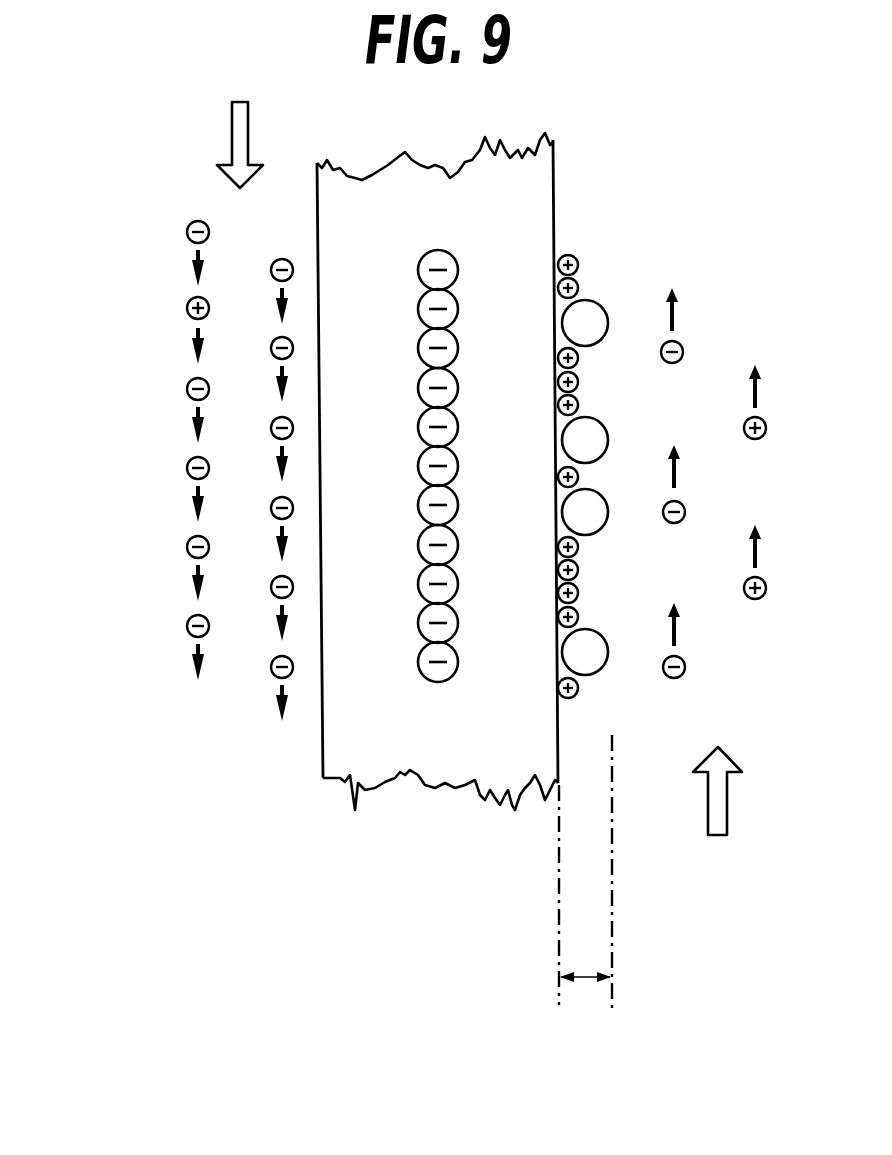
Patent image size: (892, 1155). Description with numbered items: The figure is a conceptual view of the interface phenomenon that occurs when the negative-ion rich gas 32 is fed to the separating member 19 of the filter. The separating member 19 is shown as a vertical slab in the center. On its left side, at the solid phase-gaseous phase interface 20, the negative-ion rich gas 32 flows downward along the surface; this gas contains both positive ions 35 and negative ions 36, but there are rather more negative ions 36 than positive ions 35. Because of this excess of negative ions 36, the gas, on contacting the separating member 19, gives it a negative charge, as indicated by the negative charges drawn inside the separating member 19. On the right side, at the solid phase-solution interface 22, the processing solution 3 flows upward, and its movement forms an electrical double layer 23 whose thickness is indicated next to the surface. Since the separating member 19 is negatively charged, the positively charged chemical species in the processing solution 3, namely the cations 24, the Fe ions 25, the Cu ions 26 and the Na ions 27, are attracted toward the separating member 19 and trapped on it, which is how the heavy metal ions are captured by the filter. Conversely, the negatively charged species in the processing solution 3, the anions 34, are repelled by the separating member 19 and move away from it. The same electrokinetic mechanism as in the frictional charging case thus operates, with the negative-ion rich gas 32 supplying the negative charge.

The processing solution 3 is at (727, 812).
The separating member 19 is at (533, 223).
The solid phase-gaseous phase interface 20 is at (322, 735).
The solid phase-solution interface 22 is at (553, 234).
The electrical double layer 23 is at (585, 975).
The cations 24 is at (578, 258).
The Fe ions 25 is at (683, 350).
The Cu ions 26 is at (586, 417).
The Na ions 27 is at (590, 630).
The negative-ion rich gas 32 is at (229, 128).
The anions 34 is at (606, 306).
The positive ions 35 is at (188, 300).
The negative ions 36 is at (188, 224).